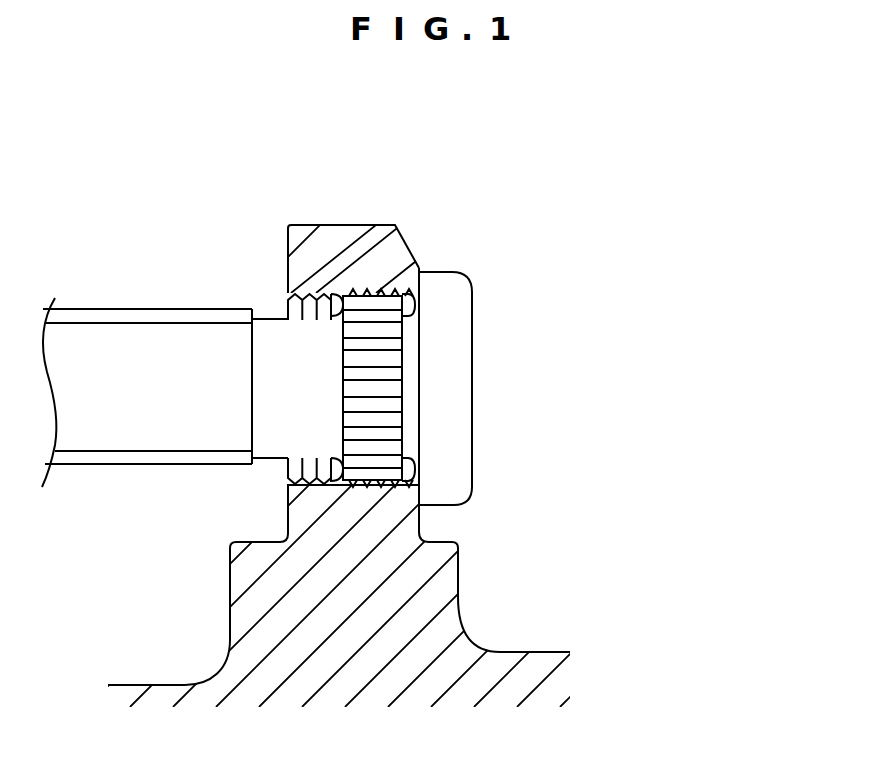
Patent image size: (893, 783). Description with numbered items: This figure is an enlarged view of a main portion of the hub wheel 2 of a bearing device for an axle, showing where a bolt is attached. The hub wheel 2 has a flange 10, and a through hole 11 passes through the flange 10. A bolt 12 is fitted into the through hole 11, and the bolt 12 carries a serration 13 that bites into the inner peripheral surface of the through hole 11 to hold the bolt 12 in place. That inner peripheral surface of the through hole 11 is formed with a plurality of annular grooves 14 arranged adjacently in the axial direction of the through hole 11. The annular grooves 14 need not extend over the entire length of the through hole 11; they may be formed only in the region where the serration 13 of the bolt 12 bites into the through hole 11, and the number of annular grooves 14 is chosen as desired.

The hub wheel 2 is at (508, 647).
The flange 10 is at (347, 222).
The through hole 11 is at (293, 308).
The bolt 12 is at (478, 380).
The serration 13 is at (387, 374).
The annular grooves 14 is at (327, 294).